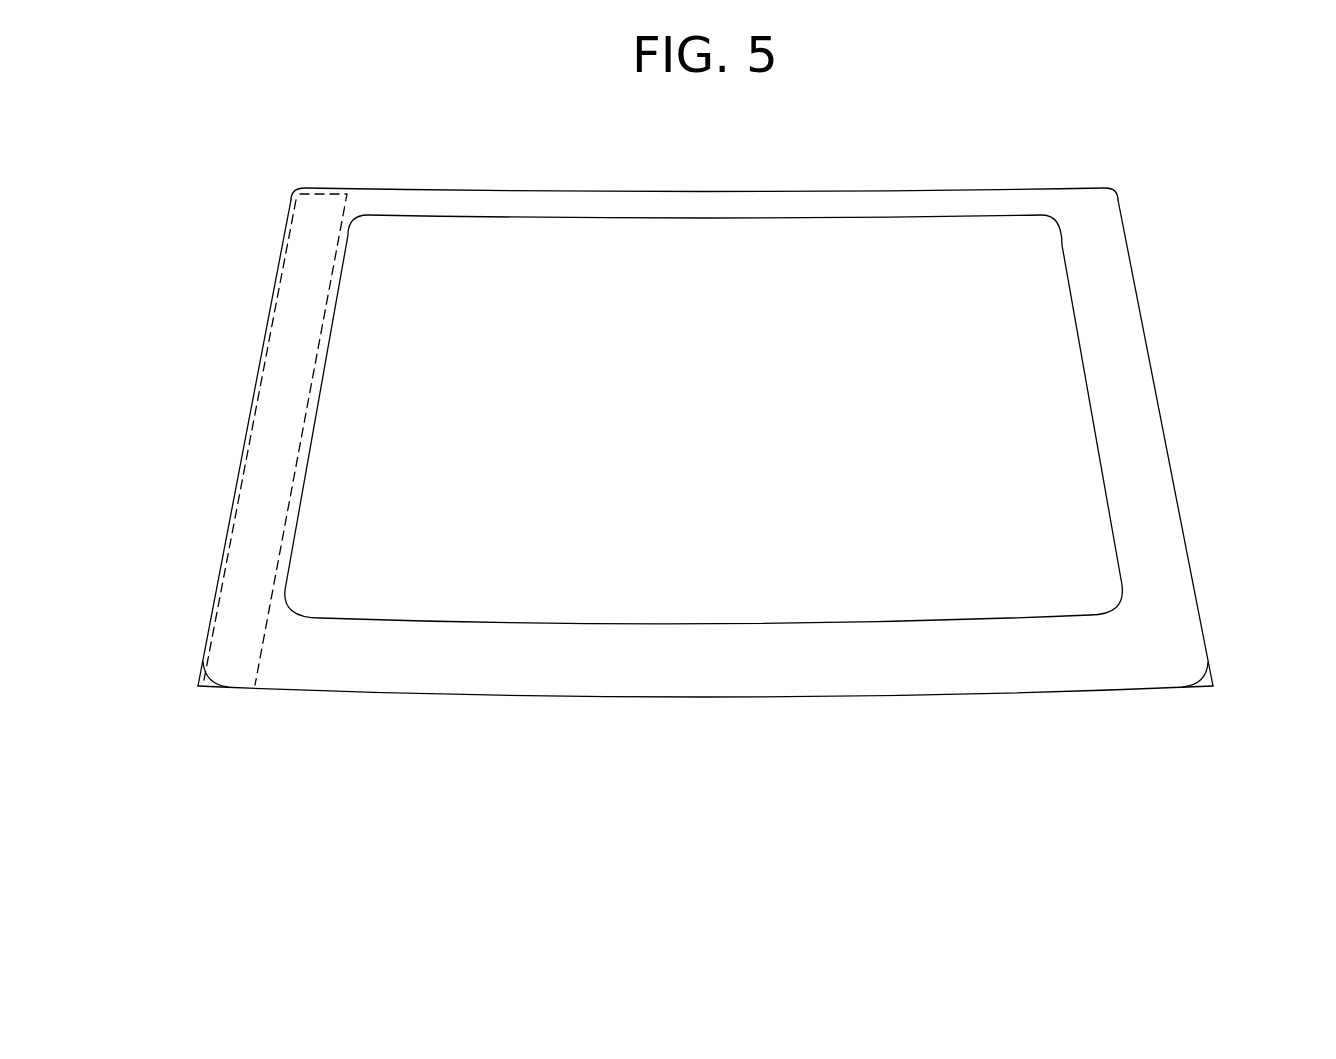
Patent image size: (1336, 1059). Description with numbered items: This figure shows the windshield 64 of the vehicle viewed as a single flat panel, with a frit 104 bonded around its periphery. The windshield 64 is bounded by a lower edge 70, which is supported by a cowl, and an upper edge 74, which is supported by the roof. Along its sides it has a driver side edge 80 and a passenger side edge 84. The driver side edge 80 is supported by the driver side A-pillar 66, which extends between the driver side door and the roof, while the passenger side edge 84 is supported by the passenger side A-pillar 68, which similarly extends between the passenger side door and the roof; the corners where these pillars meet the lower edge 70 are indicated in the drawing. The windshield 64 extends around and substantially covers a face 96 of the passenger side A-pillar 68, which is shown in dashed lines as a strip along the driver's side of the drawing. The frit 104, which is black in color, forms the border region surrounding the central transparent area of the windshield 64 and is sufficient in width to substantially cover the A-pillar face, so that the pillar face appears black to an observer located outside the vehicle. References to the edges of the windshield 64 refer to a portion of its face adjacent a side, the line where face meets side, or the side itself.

The windshield 64 is at (720, 436).
The driver side A-pillar 66 is at (1212, 674).
The passenger side A-pillar 68 is at (198, 674).
The lower edge 70 is at (690, 697).
The upper edge 74 is at (660, 192).
The driver side edge 80 is at (256, 378).
The passenger side edge 84 is at (1160, 408).
The face of the passenger side A-pillar 96 is at (232, 597).
The frit 104 is at (701, 454).